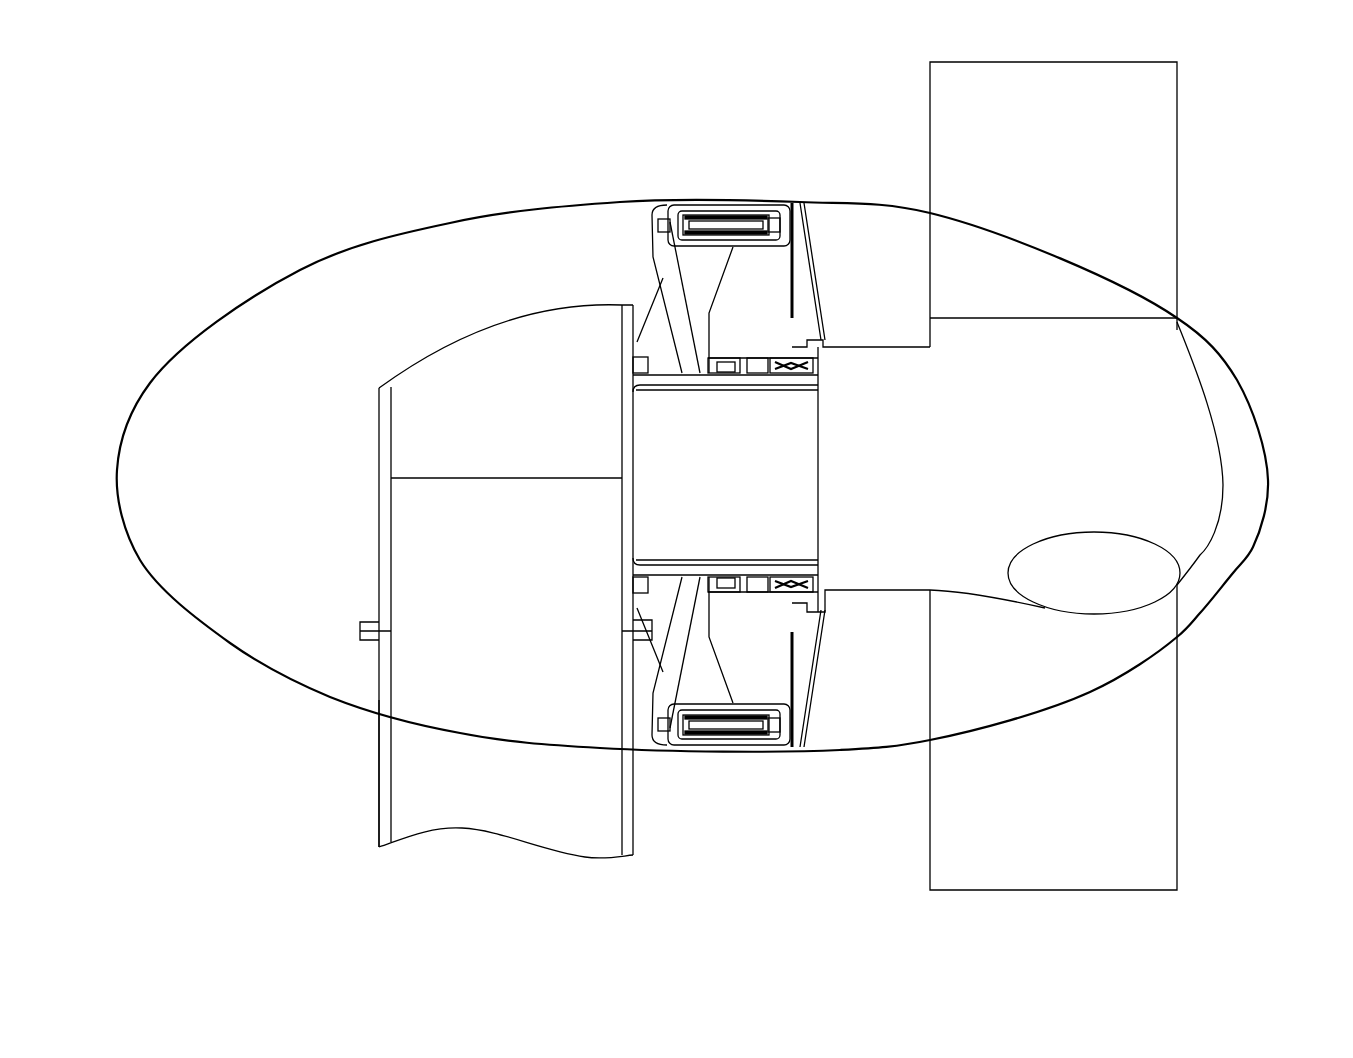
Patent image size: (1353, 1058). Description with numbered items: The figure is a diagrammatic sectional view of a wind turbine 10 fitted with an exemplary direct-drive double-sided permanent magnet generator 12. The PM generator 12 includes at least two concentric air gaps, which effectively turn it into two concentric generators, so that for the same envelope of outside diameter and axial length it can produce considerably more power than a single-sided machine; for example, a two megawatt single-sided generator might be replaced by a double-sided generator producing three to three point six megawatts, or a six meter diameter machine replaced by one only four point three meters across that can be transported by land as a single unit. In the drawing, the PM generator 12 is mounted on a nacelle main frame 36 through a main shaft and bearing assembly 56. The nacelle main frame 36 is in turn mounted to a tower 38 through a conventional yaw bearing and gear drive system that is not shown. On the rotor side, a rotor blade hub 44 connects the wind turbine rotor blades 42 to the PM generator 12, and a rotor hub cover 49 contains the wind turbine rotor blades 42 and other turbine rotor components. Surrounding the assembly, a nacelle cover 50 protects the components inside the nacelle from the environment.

The wind turbine 10 is at (238, 186).
The direct-drive double-sided PM generator 12 is at (699, 202).
The nacelle main frame 36 is at (433, 353).
The tower 38 is at (383, 757).
The wind turbine rotor blades 42 is at (1179, 108).
The rotor blade hub 44 is at (1200, 555).
The rotor hub cover 49 is at (1189, 323).
The nacelle cover 50 is at (478, 212).
The main shaft and bearing assembly 56 is at (650, 407).